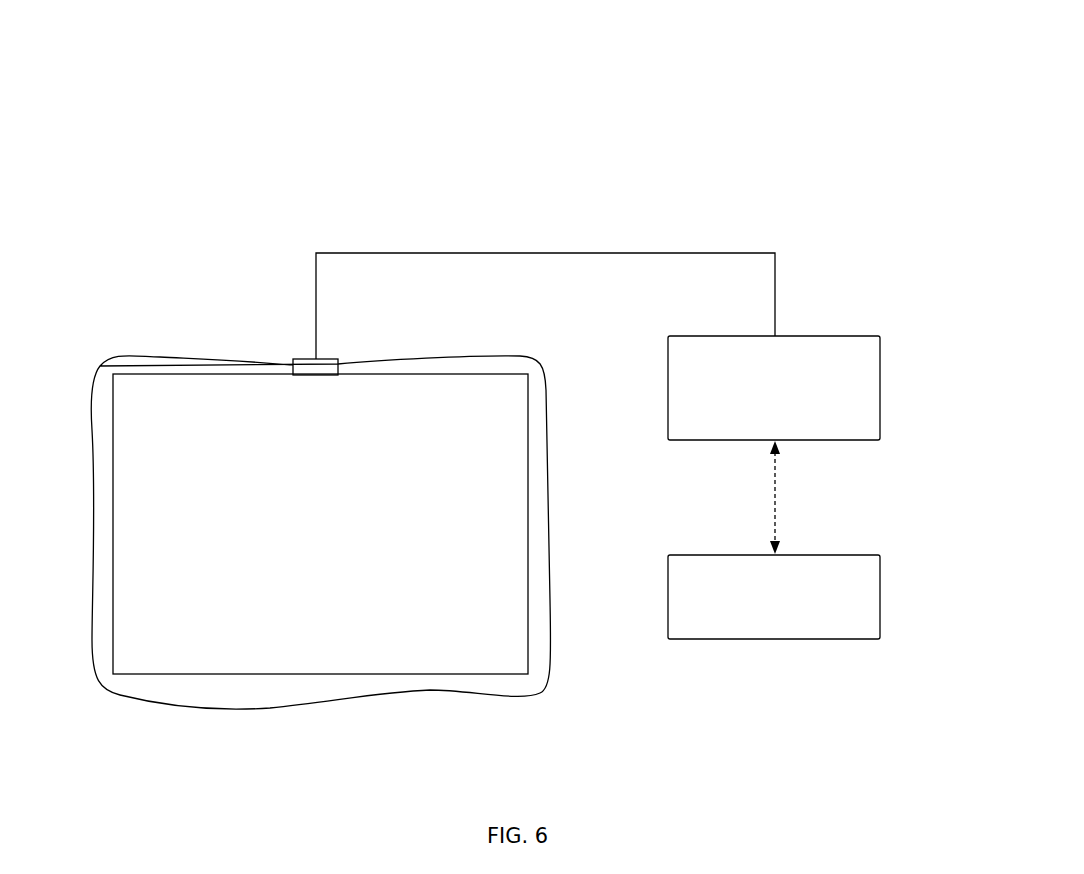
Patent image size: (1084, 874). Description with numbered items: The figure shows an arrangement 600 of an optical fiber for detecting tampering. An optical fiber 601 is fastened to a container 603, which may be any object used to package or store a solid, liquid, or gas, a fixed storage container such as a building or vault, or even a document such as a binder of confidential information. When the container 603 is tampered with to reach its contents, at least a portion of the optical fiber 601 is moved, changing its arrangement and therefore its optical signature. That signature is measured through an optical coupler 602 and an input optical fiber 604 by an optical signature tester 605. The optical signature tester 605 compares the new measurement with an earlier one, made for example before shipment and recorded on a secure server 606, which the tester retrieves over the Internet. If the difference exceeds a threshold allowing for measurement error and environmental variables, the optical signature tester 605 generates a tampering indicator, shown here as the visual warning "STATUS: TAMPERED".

The arrangement of an optical fiber for detecting tampering 600 is at (533, 80).
The optical fiber 601 is at (180, 361).
The optical coupler 602 is at (338, 358).
The container 603 is at (262, 676).
The input optical fiber 604 is at (581, 252).
The optical signature tester 605 is at (845, 336).
The secure server 606 is at (828, 553).